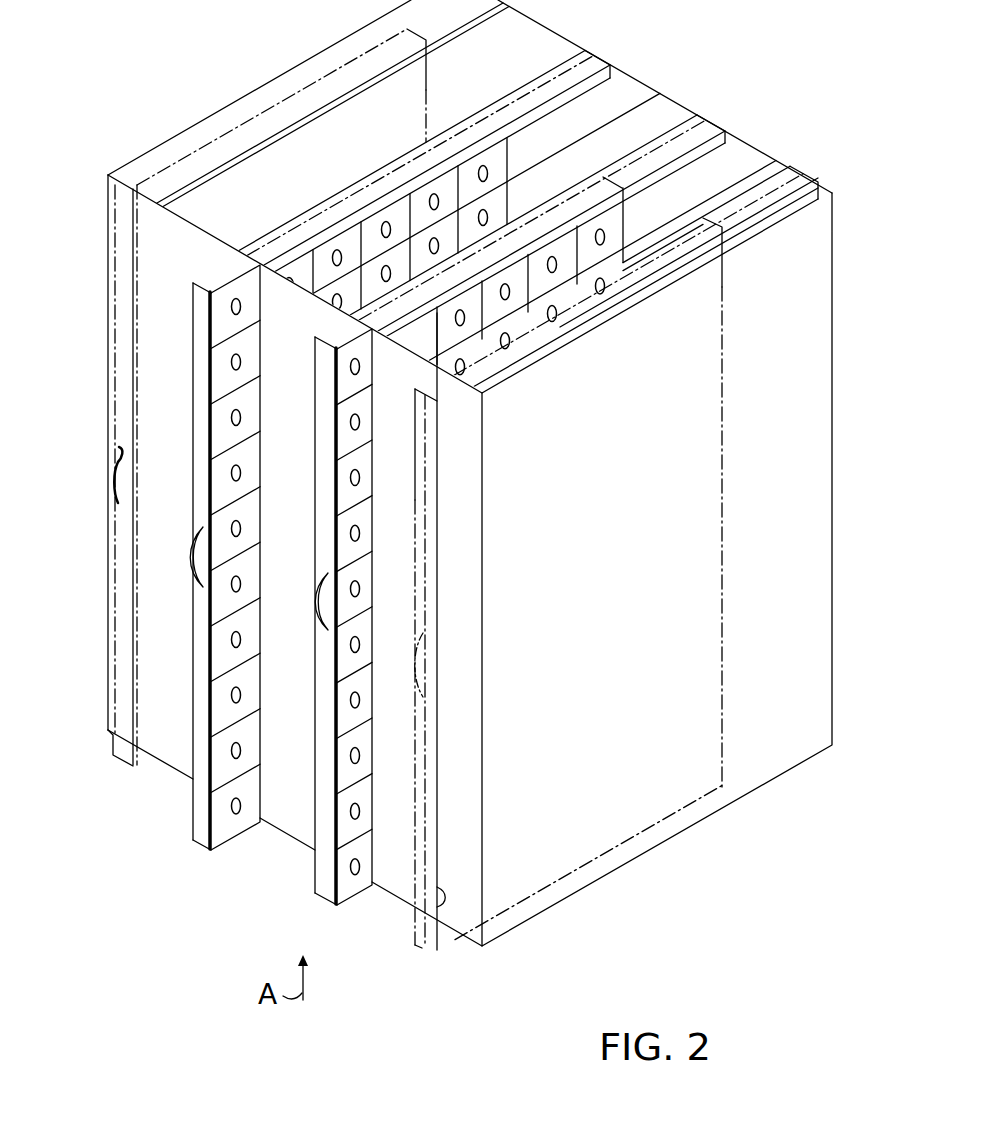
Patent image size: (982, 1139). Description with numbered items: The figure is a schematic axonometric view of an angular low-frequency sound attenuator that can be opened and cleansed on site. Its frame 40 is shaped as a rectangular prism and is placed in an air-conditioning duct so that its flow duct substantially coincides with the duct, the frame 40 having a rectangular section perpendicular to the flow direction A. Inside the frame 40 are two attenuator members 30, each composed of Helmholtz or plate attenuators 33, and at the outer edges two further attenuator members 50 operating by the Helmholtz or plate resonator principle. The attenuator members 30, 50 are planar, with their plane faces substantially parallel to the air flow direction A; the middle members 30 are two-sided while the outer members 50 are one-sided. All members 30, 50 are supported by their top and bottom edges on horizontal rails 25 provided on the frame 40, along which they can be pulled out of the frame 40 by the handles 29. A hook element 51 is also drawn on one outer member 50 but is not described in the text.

The horizontal rail 25 is at (600, 62).
The handle 29 is at (113, 500).
The attenuator member 30 is at (221, 757).
The plate attenuator 33 is at (226, 832).
The frame 40 is at (833, 592).
The attenuator member 50 is at (122, 549).
The hook 51 is at (438, 933).